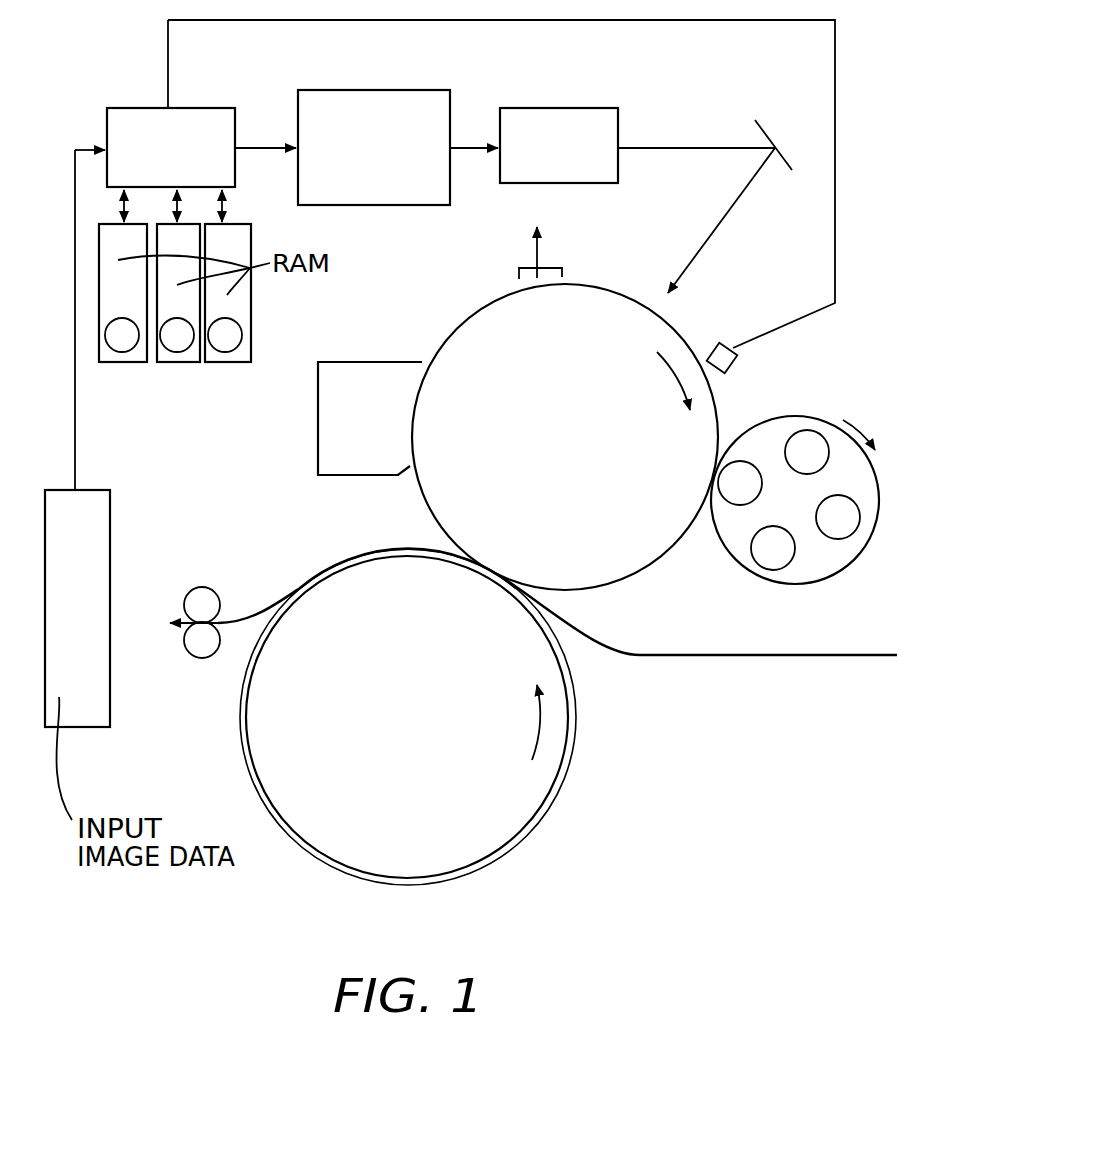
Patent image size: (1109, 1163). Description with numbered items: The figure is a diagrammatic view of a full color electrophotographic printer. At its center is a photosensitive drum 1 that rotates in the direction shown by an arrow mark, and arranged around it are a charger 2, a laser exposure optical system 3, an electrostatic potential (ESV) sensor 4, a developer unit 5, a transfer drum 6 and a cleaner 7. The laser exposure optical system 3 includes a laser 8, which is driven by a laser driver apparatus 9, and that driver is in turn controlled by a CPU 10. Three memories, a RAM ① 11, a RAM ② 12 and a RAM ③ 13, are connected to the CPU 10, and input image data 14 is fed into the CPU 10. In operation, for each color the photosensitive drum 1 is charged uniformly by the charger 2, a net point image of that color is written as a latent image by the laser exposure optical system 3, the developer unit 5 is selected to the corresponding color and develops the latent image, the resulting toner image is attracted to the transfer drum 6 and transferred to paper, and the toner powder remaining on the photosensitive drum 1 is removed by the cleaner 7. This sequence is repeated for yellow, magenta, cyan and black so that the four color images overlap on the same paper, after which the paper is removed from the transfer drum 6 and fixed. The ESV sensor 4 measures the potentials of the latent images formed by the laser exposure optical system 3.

The photosensitive drum 1 is at (470, 328).
The charger 2 is at (562, 268).
The laser exposure optical system 3 is at (698, 115).
The electrostatic potential (ESV) sensor 4 is at (733, 356).
The developer unit 5 is at (813, 570).
The transfer drum 6 is at (533, 793).
The cleaner 7 is at (357, 373).
The laser 8 is at (565, 108).
The laser driver apparatus 9 is at (383, 90).
The CPU 10 is at (148, 108).
The RAM ① 11 is at (120, 362).
The RAM ② 12 is at (177, 362).
The RAM ③ 13 is at (230, 362).
The input image data 14 is at (70, 727).